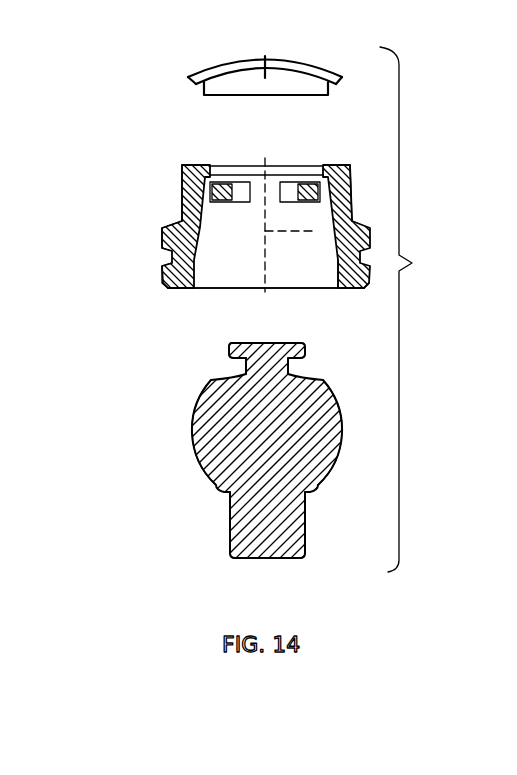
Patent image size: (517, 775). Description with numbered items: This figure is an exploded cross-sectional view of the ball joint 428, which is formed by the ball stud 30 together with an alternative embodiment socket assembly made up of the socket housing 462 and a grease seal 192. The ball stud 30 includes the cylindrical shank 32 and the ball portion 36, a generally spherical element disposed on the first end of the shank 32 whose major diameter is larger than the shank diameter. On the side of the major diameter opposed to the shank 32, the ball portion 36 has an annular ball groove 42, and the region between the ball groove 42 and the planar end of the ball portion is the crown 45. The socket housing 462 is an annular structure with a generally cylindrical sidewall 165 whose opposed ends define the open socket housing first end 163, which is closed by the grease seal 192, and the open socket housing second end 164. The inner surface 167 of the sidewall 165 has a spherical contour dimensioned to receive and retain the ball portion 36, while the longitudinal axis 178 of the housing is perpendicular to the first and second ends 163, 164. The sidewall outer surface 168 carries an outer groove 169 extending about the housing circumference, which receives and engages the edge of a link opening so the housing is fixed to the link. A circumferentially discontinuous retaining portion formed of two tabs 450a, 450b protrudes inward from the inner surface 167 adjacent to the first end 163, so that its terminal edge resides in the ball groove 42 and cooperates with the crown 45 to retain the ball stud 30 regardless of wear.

The ball joint 428 is at (421, 309).
The grease seal 192 is at (188, 78).
The socket housing first end 163 is at (184, 166).
The socket housing 462 is at (181, 222).
The sidewall 165 is at (165, 228).
The outer groove 169 is at (168, 268).
The socket housing second end 164 is at (175, 289).
The sidewall outer surface 168 is at (350, 180).
The inner surface 167 is at (336, 252).
The tab 450a is at (225, 168).
The tab 450b is at (298, 168).
The longitudinal axis 178 is at (357, 216).
The ball stud 30 is at (208, 428).
The crown 45 is at (237, 342).
The annular ball groove 42 is at (243, 372).
The ball portion 36 is at (197, 467).
The shank 32 is at (228, 521).